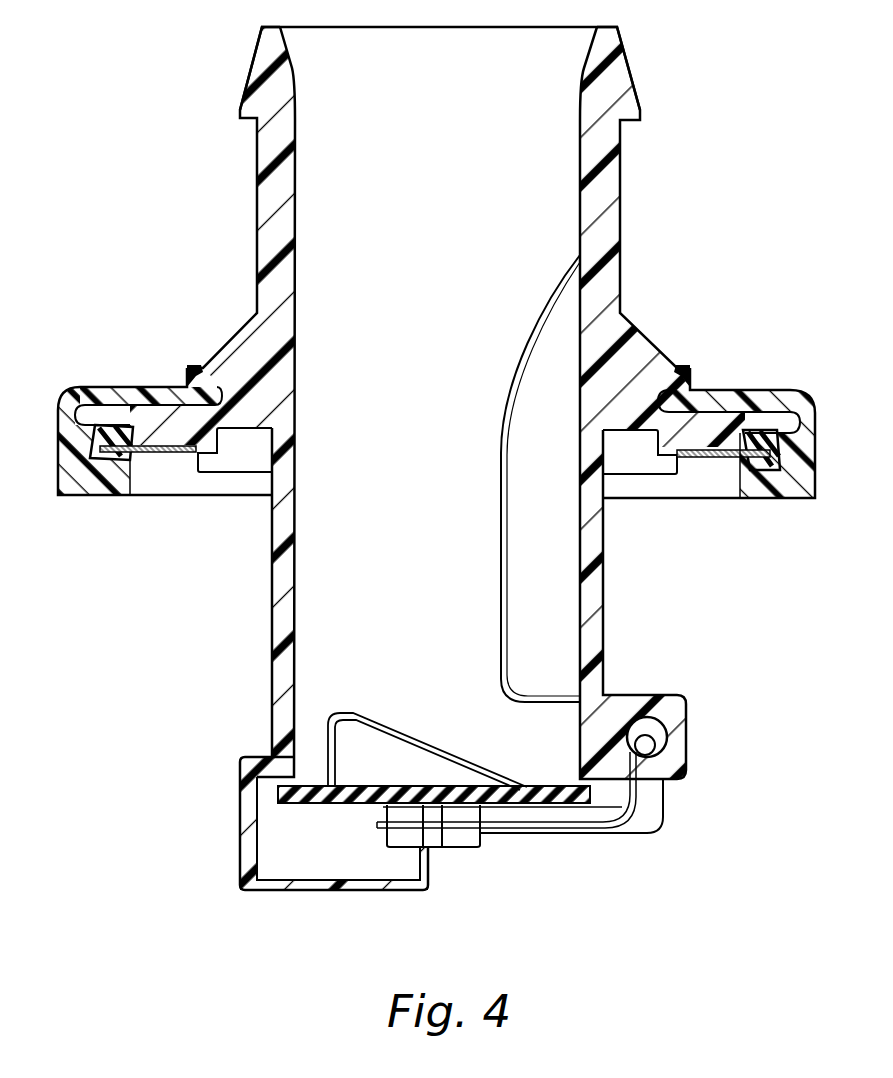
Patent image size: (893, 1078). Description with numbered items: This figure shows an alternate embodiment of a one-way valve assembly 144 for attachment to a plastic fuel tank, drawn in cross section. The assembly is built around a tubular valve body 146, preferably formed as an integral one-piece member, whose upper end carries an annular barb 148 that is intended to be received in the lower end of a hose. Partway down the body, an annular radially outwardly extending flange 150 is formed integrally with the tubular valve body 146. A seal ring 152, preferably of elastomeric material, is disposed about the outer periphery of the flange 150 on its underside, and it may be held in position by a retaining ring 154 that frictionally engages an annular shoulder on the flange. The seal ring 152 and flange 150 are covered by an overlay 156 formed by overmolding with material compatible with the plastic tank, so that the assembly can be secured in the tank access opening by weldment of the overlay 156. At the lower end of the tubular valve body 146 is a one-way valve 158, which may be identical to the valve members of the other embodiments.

The one-way valve assembly 144 is at (246, 714).
The tubular valve body 146 is at (606, 598).
The annular barb 148 is at (250, 68).
The annular radially outwardly extending flange 150 is at (770, 416).
The seal ring 152 is at (92, 433).
The retaining ring 154 is at (160, 452).
The overlay 156 is at (128, 387).
The one-way valve 158 is at (342, 808).